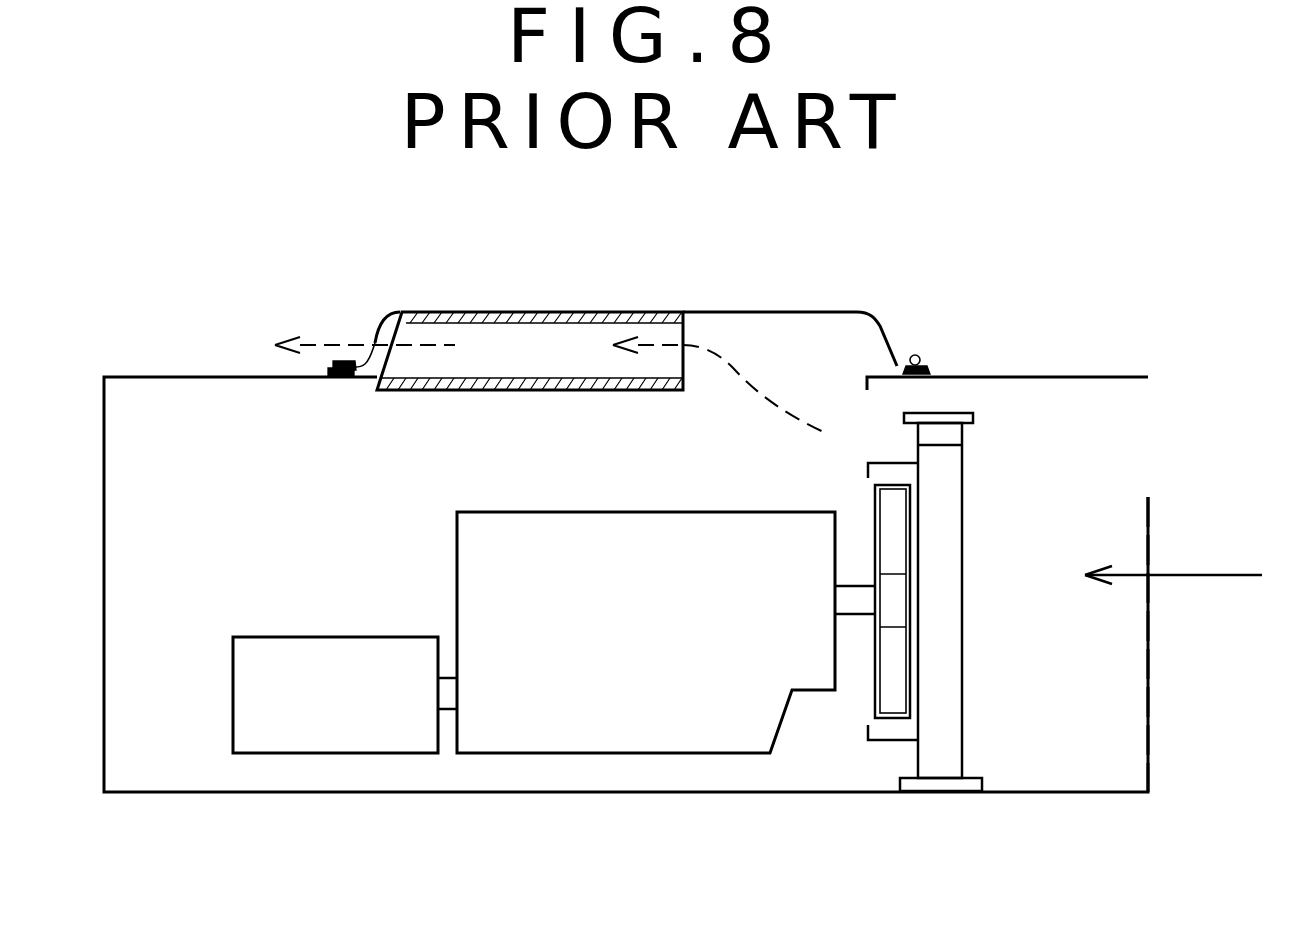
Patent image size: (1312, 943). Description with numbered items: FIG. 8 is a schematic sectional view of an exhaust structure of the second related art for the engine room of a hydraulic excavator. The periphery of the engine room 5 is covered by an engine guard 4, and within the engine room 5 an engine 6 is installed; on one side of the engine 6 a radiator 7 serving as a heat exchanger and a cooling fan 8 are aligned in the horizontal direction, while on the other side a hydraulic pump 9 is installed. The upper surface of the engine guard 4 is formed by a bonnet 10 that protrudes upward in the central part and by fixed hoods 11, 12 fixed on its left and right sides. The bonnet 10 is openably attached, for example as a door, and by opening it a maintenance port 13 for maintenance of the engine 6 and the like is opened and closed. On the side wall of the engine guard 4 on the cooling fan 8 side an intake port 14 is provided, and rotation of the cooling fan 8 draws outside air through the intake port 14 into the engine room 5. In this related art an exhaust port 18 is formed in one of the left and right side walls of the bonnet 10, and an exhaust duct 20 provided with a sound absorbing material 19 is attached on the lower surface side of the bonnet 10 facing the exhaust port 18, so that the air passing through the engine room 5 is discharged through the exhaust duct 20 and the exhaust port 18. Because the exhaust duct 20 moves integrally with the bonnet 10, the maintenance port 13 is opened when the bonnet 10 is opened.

The engine guard 4 is at (1018, 363).
The engine room 5 is at (654, 487).
The engine 6 is at (602, 753).
The radiator 7 is at (962, 692).
The cooling fan 8 is at (892, 718).
The hydraulic pump 9 is at (325, 753).
The bonnet 10 is at (718, 312).
The fixed hood 11 is at (227, 377).
The fixed hood 12 is at (960, 373).
The maintenance port 13 is at (812, 362).
The intake port 14 is at (1148, 672).
The exhaust port 18 is at (373, 340).
The sound absorbing material 19 is at (515, 380).
The exhaust duct 20 is at (426, 393).